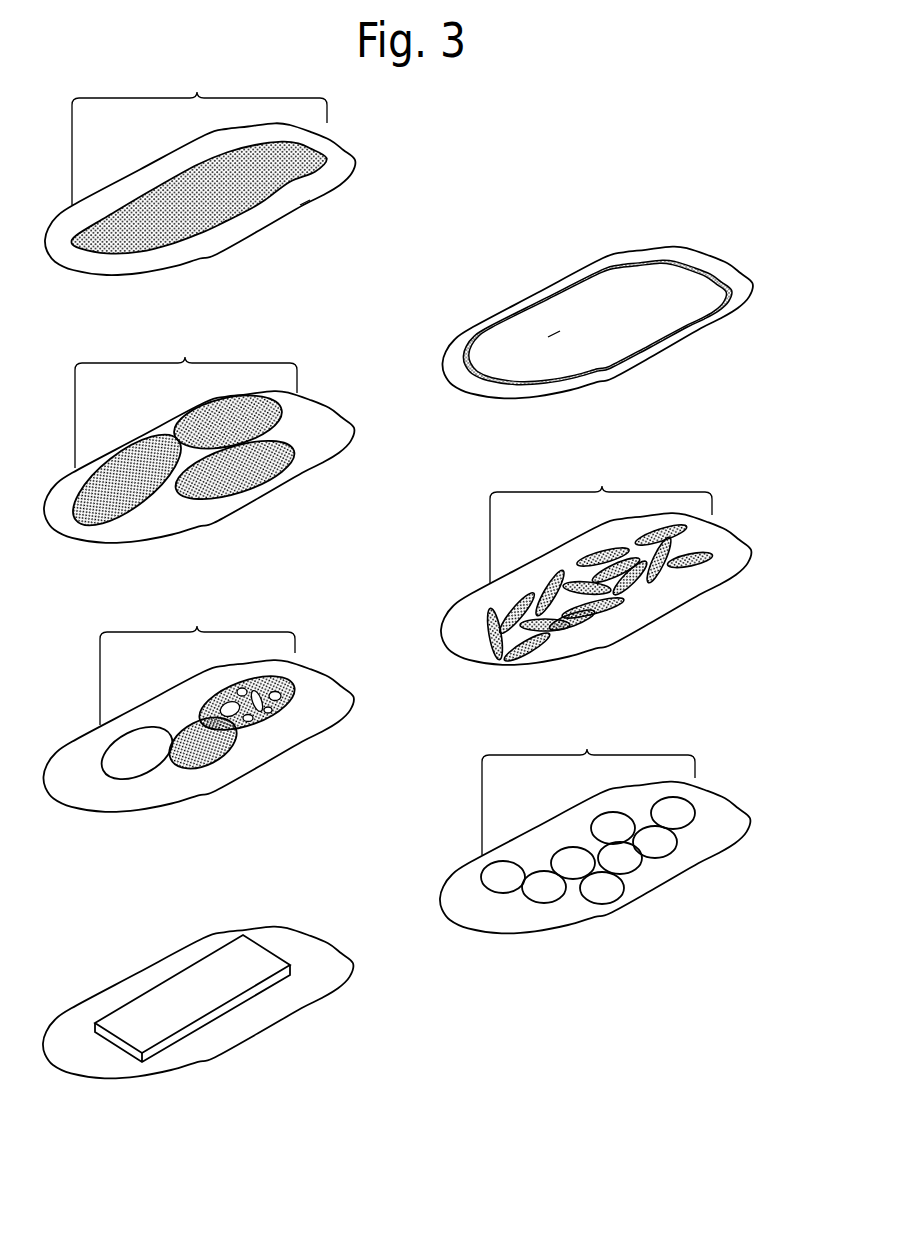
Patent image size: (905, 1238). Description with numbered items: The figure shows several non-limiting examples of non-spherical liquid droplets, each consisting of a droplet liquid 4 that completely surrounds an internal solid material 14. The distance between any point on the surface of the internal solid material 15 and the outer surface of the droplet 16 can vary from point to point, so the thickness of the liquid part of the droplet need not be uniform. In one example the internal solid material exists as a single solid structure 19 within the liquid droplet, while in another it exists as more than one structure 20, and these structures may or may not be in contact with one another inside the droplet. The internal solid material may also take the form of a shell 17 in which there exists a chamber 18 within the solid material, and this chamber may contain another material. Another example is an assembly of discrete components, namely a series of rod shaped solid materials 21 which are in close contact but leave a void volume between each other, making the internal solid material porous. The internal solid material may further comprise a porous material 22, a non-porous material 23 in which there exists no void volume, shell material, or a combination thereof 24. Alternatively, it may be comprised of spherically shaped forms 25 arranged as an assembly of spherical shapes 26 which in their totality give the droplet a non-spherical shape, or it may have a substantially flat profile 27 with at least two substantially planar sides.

The droplet liquid 4 is at (333, 150).
The internal solid material 14 is at (183, 193).
The surface of the internal solid material 15 is at (222, 223).
The outer surface of the droplet 16 is at (300, 205).
The shell 17 is at (660, 327).
The chamber 18 is at (548, 337).
The single solid structure 19 is at (199, 135).
The more than one structure 20 is at (180, 435).
The rod shaped solid materials 21 is at (599, 561).
The porous material 22 is at (283, 713).
The non-porous material 23 is at (223, 768).
The combination of materials 24 is at (197, 662).
The spherically shaped forms 25 is at (495, 875).
The assembly of spherical shapes 26 is at (588, 788).
The substantially flat profile 27 is at (170, 992).